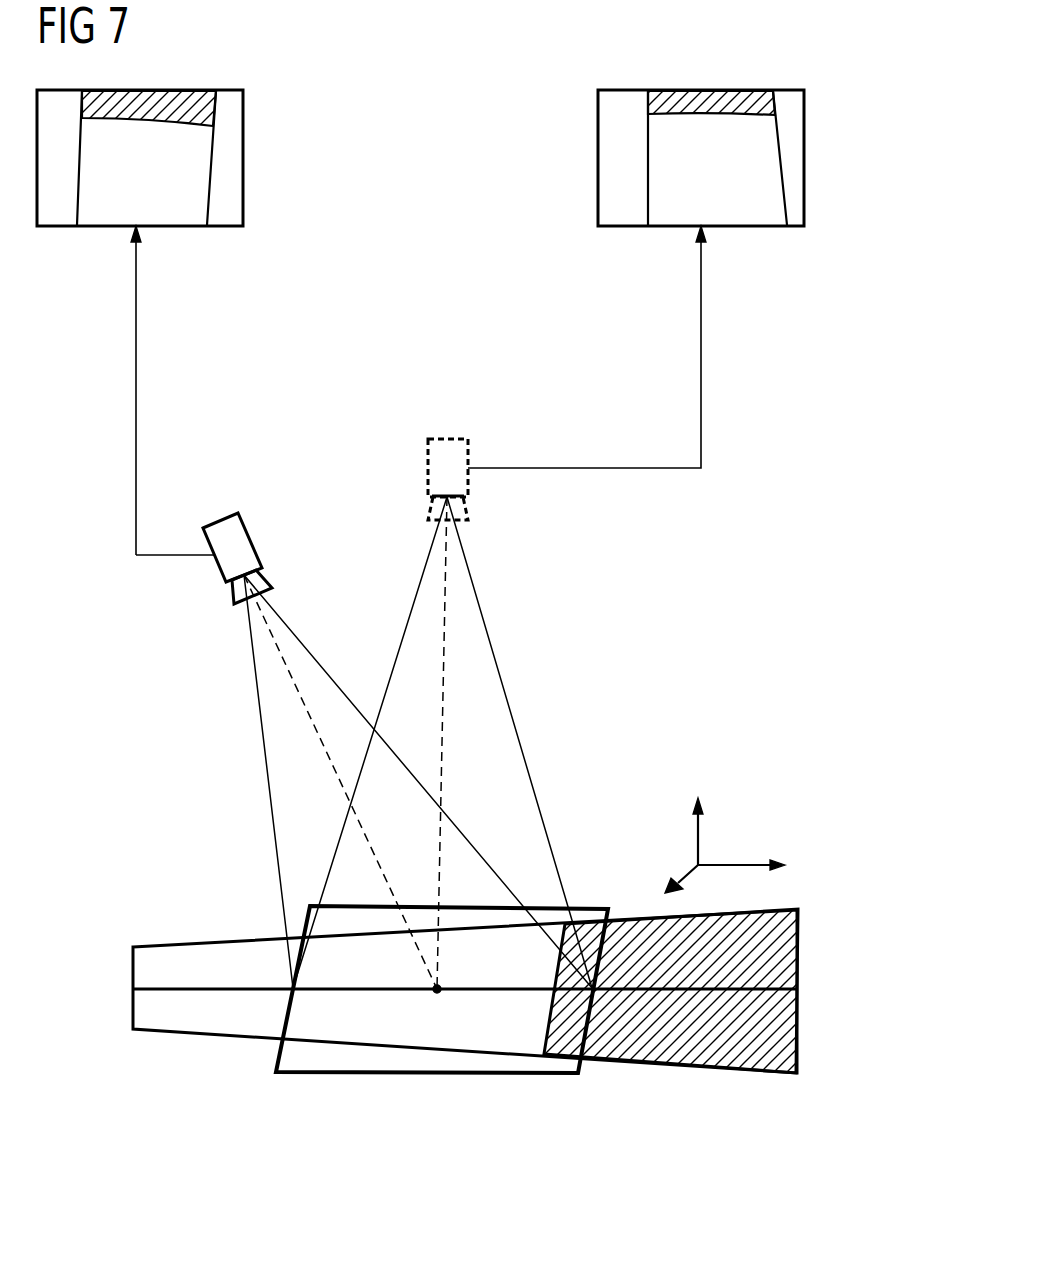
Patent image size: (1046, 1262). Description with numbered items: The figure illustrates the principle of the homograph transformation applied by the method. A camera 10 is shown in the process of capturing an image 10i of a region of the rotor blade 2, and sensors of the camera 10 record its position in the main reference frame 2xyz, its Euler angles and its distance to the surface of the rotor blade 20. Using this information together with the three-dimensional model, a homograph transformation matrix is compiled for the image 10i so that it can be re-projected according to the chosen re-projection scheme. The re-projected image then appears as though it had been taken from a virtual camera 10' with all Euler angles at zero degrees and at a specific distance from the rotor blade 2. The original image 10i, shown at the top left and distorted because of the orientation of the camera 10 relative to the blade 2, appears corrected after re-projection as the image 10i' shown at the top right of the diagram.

The camera 10 is at (364, 717).
The virtual camera 10' is at (442, 676).
The image 10i is at (181, 322).
The camera image from second position 10i' is at (679, 279).
The rotor blade 2 is at (628, 1112).
The rotor blade 20 is at (737, 1050).
The main reference frame 2xyz is at (755, 803).